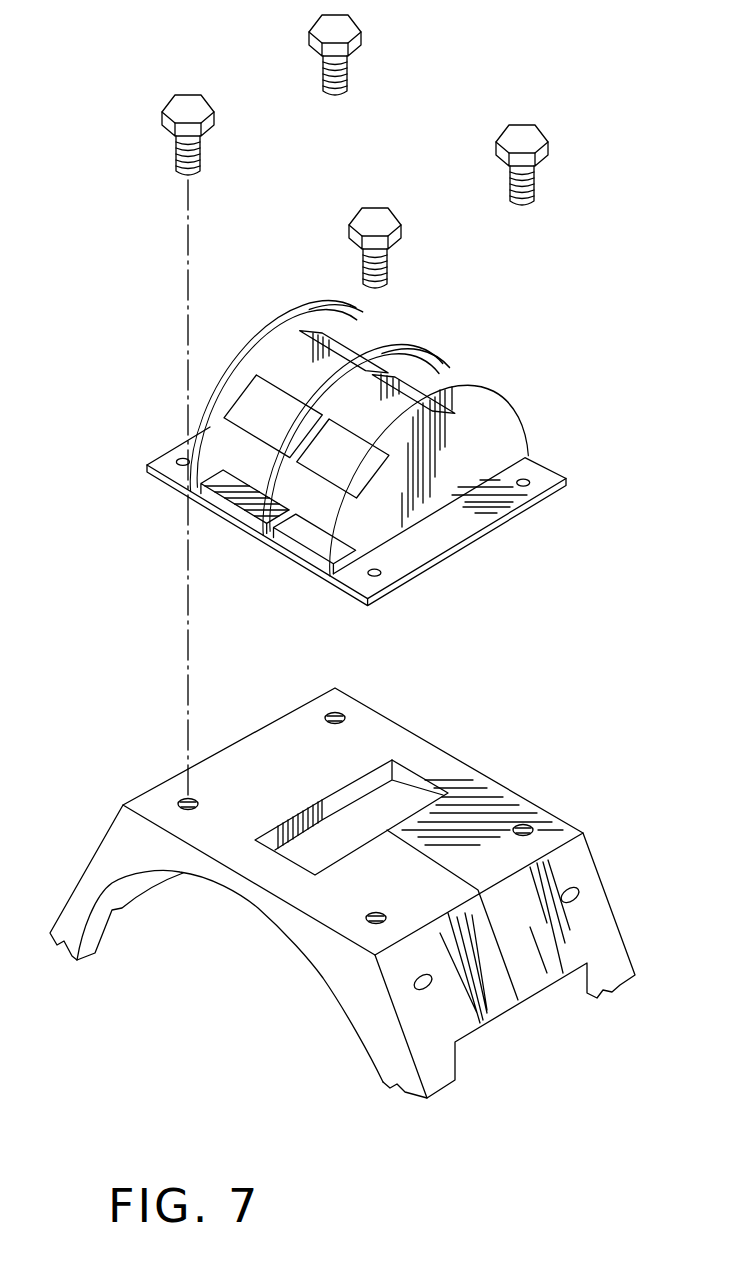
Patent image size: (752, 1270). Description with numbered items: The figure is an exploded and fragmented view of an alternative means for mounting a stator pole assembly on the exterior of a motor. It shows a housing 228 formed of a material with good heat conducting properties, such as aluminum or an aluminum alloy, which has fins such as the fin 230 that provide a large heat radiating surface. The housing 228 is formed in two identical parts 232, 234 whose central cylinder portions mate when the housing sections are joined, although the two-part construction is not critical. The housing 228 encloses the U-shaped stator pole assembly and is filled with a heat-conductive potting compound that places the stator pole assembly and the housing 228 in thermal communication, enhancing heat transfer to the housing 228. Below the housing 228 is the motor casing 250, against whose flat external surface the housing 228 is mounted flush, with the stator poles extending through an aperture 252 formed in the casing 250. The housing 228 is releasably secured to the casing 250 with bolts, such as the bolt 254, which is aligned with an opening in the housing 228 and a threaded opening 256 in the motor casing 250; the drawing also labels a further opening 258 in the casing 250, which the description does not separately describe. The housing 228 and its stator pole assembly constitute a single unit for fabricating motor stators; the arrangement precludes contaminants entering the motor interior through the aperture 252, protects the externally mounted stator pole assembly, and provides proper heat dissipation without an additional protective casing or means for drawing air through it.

The housing 228 is at (361, 439).
The fin 230 is at (305, 342).
The housing part 232 is at (212, 407).
The housing part 234 is at (486, 420).
The motor casing 250 is at (342, 866).
The aperture 252 is at (375, 813).
The bolt 254 is at (165, 140).
The threaded opening 256 is at (185, 463).
The threaded hole 258 is at (185, 797).